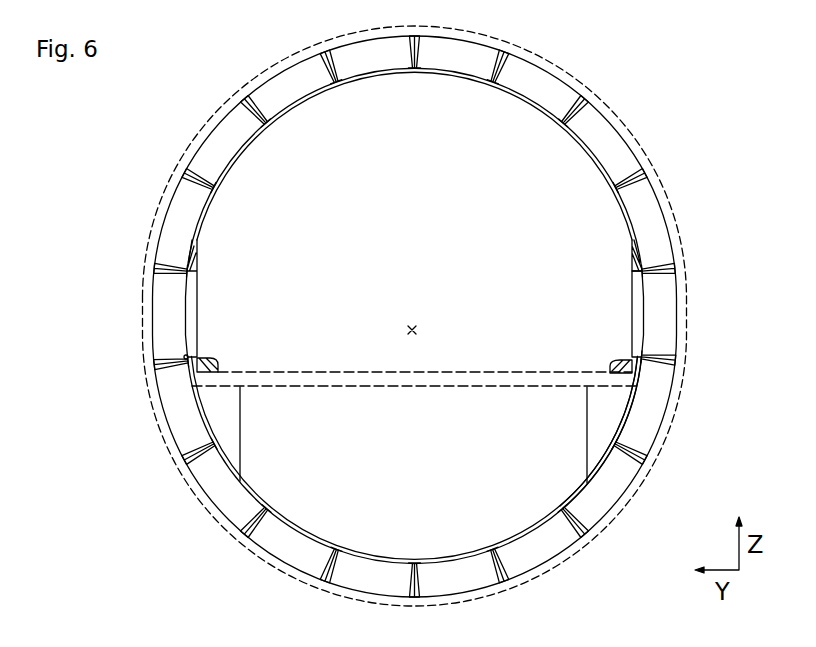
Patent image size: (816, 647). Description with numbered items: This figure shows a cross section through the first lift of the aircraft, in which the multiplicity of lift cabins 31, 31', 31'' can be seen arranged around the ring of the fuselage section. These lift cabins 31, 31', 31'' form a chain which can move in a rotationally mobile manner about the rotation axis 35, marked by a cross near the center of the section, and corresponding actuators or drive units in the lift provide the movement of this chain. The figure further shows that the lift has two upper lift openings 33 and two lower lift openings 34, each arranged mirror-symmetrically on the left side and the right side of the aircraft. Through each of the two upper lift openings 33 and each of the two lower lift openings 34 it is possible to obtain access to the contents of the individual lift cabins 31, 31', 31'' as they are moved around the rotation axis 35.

The lift cabin 31 is at (685, 326).
The lift cabin 31' is at (674, 400).
The lift cabin 31'' is at (617, 491).
The upper lift opening 33 is at (632, 318).
The lower lift opening 34 is at (613, 408).
The rotation axis 35 is at (562, 217).